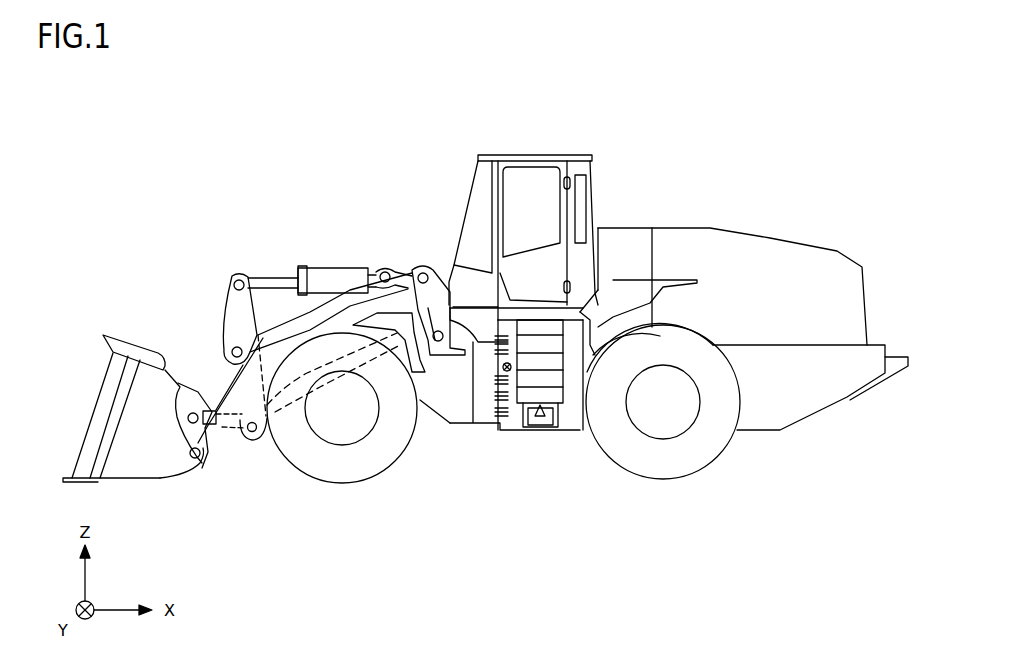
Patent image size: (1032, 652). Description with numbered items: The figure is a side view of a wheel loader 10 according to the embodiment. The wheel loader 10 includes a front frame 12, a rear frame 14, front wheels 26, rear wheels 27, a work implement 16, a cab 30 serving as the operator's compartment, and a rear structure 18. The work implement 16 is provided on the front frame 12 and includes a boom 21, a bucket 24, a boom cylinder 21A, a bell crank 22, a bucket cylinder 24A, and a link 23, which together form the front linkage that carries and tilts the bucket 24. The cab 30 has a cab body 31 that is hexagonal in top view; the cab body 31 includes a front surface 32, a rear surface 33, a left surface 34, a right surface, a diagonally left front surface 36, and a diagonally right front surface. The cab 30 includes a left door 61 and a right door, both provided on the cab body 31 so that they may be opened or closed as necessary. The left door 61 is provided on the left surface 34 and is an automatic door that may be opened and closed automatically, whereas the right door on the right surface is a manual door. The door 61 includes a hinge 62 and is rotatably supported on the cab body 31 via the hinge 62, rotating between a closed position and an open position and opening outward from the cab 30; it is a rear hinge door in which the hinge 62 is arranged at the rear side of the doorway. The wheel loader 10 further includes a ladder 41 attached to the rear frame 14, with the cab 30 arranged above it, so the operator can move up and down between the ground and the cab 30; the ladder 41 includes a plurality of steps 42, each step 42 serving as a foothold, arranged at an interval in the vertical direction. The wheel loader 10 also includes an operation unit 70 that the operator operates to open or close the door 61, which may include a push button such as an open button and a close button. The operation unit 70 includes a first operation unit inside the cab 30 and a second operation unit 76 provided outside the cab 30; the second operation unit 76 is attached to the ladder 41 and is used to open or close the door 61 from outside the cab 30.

The wheel loader 10 is at (634, 124).
The front frame 12 is at (433, 405).
The rear frame 14 is at (587, 367).
The work implement 16 is at (215, 322).
The rear structure 18 is at (752, 250).
The boom 21 is at (283, 333).
The boom cylinder 21A is at (400, 343).
The bell crank 22 is at (235, 320).
The link 23 is at (212, 410).
The bucket 24 is at (130, 420).
The bucket cylinder 24A is at (325, 280).
The front wheels 26 is at (342, 464).
The rear wheels 27 is at (662, 464).
The cab 30 is at (568, 150).
The cab body 31 is at (535, 150).
The front surface 32 is at (468, 203).
The rear surface 33 is at (595, 195).
The left surface 34 is at (545, 185).
The diagonally left front surface 36 is at (487, 180).
The ladder 41 is at (538, 416).
The step 42 is at (560, 410).
The left door 61 is at (518, 195).
The hinge 62 is at (570, 180).
The operation unit 70 is at (498, 367).
The second operation unit 76 is at (507, 367).